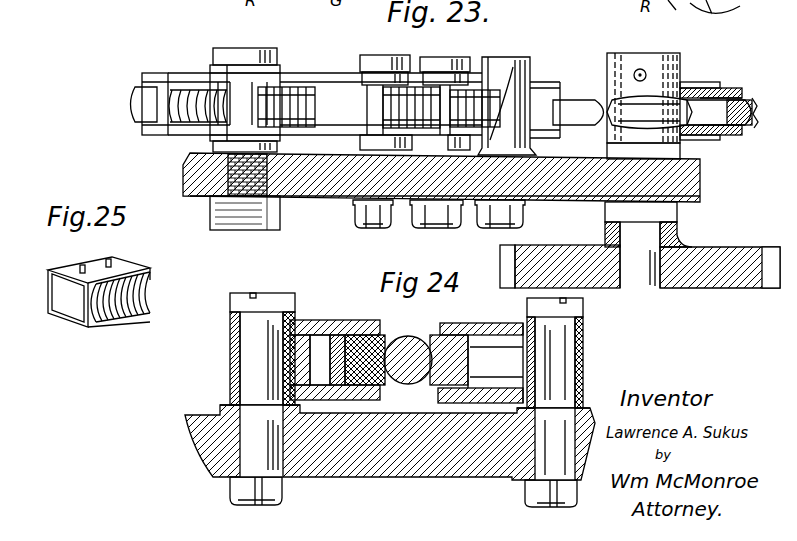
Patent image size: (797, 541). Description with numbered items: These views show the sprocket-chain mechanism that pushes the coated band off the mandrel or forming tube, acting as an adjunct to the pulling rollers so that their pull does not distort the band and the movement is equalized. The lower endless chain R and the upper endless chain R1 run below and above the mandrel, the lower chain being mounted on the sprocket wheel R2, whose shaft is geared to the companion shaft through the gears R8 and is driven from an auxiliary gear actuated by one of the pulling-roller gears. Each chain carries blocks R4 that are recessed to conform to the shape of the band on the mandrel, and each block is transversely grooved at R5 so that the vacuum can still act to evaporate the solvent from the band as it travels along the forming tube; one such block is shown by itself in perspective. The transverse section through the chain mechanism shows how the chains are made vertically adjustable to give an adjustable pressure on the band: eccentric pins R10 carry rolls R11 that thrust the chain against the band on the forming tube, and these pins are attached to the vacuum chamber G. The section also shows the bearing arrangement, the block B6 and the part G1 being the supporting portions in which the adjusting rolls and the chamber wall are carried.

In FIG. 23, the chain blocks R4 is at (767, 113).
In FIG. 25, the chain blocks R4 is at (145, 288).
In FIG. 24, the chain blocks R4 is at (430, 335).
In FIG. 23, the transverse grooves R5 is at (282, 110).
In FIG. 25, the transverse grooves R5 is at (105, 318).
In FIG. 23, the sprocket wheel R2 is at (703, 117).
In FIG. 23, the gears R8 is at (512, 252).
In FIG. 23, the eccentric pins R10 is at (507, 106).
In FIG. 24, the eccentric pins R10 is at (284, 301).
In FIG. 24, the rolls R11 is at (609, 360).
In FIG. 24, the endless chain R is at (350, 322).
In FIG. 24, the endless chain R1 is at (480, 323).
In FIG. 24, the bearing block B6 is at (391, 390).
In FIG. 24, the vacuum chamber G is at (392, 468).
In FIG. 23, the base plate G1 is at (324, 197).